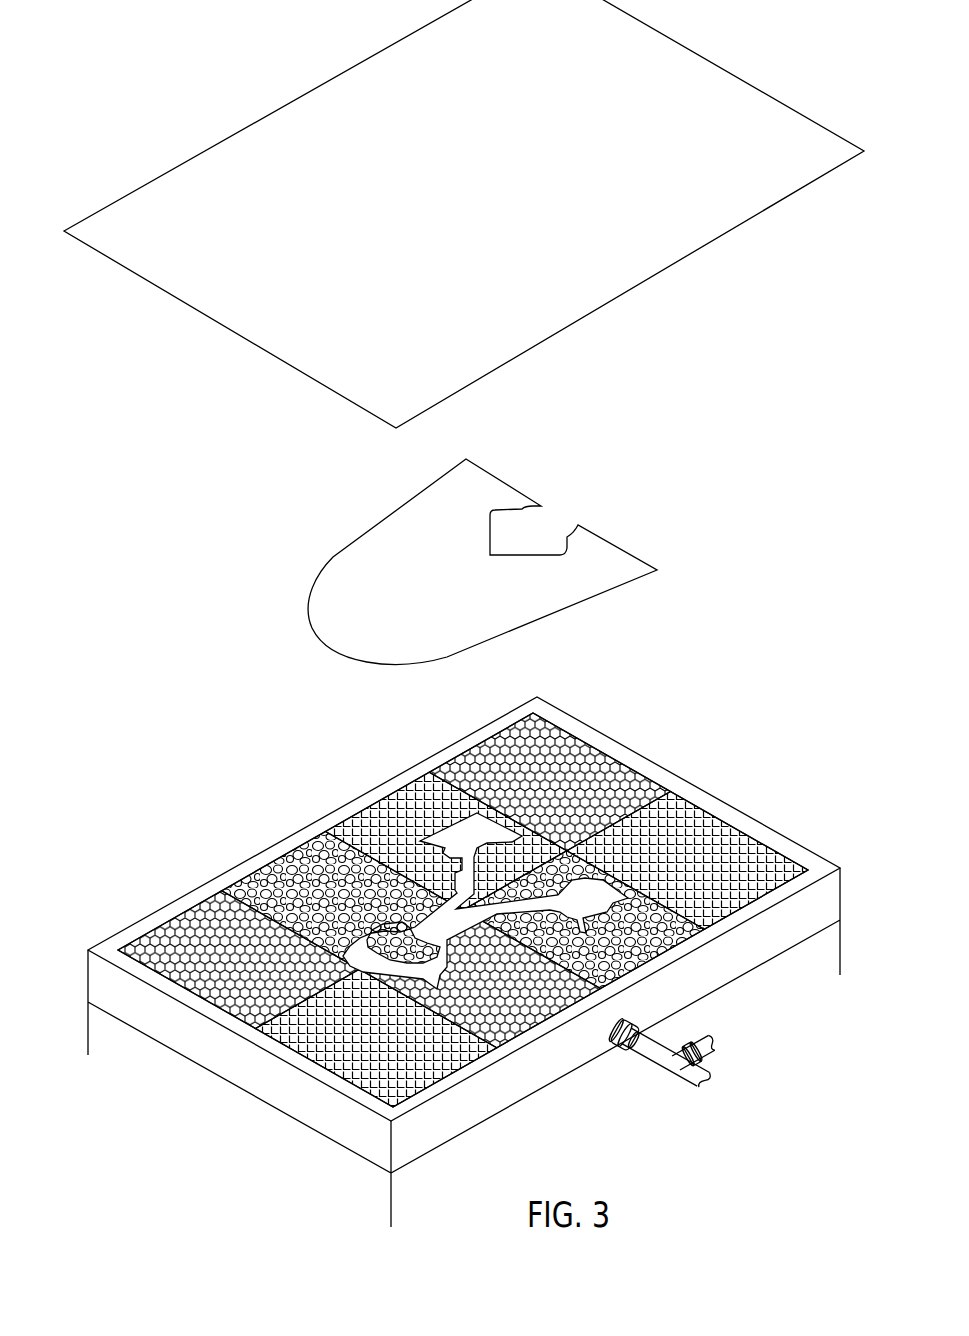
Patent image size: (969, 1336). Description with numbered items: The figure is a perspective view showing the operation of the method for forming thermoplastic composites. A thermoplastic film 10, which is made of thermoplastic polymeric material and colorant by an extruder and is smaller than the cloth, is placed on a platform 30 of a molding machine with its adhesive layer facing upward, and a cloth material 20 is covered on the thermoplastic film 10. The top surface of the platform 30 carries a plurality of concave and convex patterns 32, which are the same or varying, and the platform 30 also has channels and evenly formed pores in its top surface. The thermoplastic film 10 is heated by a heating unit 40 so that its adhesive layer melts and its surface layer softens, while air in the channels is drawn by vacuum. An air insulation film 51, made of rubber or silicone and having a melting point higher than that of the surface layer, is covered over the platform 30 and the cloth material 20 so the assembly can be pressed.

The thermoplastic film 10 is at (343, 955).
The cloth material 20 is at (323, 583).
The platform 30 is at (770, 830).
The concave and convex patterns 32 is at (567, 777).
The heating unit 40 is at (95, 1036).
The air insulation film 51 is at (213, 298).